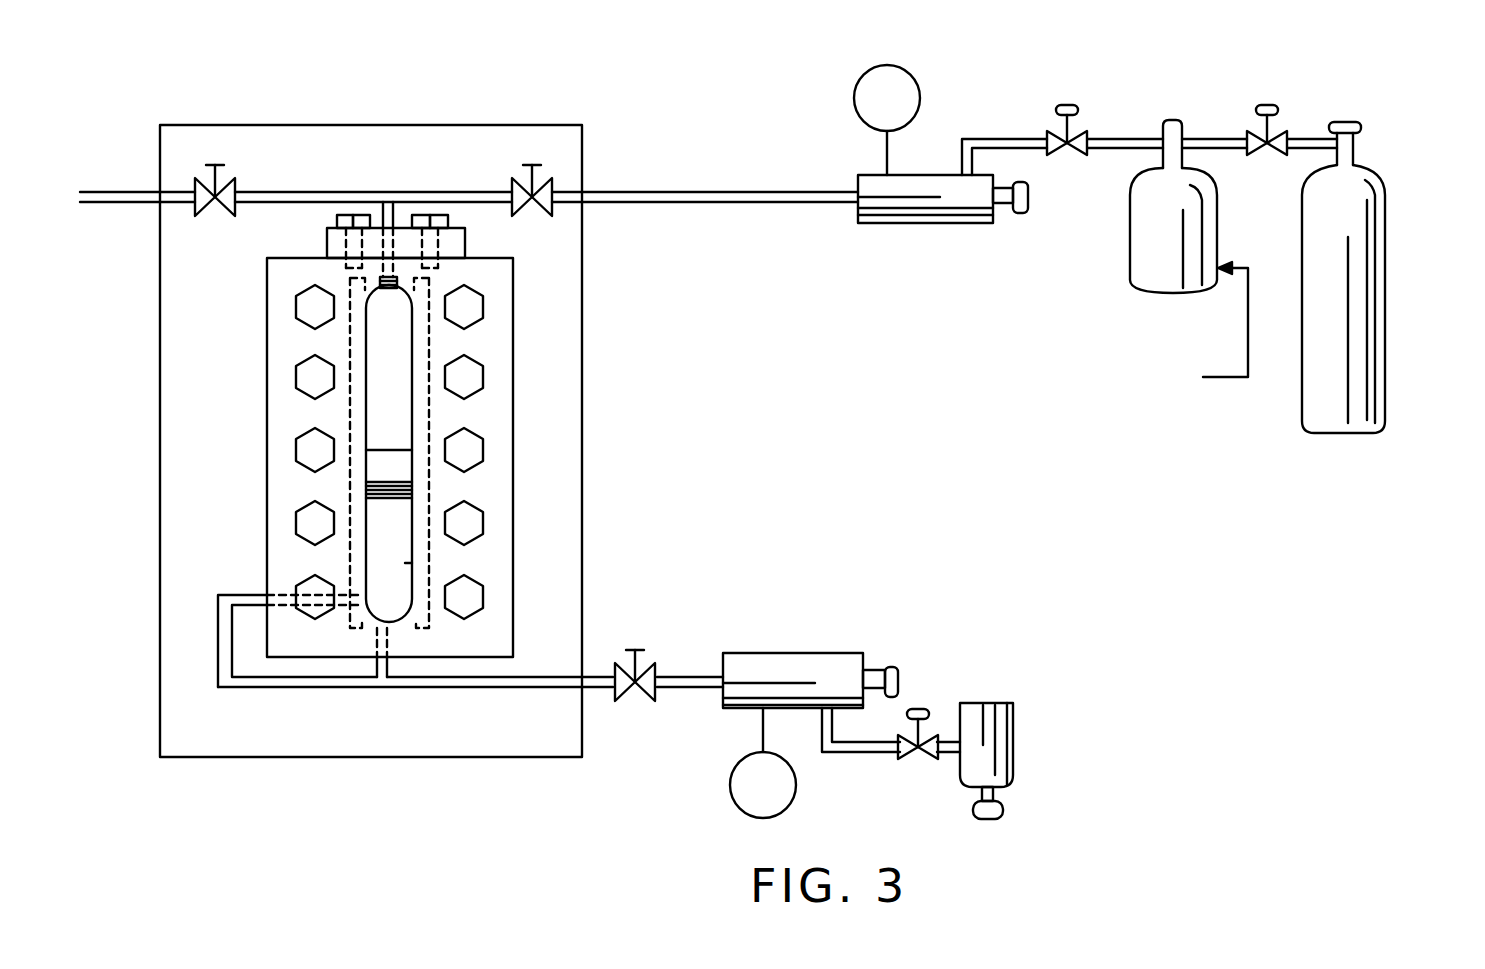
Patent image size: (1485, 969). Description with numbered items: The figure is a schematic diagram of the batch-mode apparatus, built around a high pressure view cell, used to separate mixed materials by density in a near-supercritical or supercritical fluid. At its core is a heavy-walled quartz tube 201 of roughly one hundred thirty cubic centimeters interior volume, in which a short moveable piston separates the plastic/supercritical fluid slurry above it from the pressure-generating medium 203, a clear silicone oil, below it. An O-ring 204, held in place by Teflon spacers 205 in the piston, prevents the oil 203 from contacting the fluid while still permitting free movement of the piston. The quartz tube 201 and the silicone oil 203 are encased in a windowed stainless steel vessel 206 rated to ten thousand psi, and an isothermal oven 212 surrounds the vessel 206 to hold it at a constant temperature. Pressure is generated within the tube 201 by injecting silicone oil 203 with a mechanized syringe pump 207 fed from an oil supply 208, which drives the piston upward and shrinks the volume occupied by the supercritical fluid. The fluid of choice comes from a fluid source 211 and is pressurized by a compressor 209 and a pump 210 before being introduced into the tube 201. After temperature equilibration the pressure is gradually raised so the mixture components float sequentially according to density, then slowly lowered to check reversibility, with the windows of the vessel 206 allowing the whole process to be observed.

The quartz tube 201 is at (413, 412).
The pressure-generating medium 203 is at (405, 563).
The O-ring 204 is at (413, 490).
The Teflon spacers 205 is at (366, 483).
The windowed 316 SS vessel 206 is at (267, 366).
The mechanized syringe pump 207 is at (797, 653).
The oil supply 208 is at (1013, 750).
The compressor 209 is at (1130, 258).
The pump 210 is at (940, 175).
The fluid source 211 is at (1385, 262).
The isothermal oven 212 is at (530, 125).